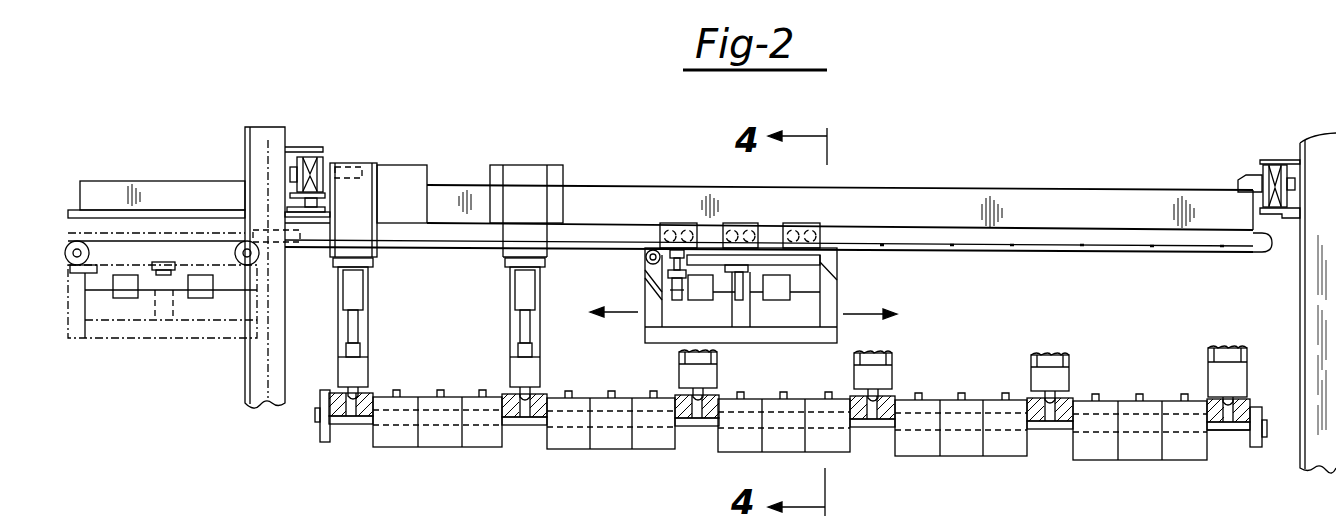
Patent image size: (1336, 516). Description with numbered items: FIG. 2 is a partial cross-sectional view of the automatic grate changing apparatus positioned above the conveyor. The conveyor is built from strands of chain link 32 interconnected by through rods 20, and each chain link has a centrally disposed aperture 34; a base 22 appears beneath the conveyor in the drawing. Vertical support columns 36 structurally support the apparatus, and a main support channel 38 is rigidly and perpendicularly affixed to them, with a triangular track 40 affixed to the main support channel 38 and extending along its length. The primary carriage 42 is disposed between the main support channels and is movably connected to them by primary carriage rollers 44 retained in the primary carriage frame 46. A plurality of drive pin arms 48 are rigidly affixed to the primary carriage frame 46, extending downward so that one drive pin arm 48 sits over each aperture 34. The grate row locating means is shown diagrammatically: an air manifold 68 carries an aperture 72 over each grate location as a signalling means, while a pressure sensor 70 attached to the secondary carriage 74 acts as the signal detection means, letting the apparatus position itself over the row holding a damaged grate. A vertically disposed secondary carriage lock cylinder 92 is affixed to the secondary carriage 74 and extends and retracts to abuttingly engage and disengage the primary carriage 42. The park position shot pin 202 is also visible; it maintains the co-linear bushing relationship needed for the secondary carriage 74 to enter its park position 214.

The through rod 20 is at (435, 438).
The base frame 22 is at (1209, 461).
The strand of chain link 32 is at (355, 415).
The aperture 34 is at (528, 413).
The vertical support column 36 is at (263, 127).
The main support channel 38 is at (297, 148).
The triangular track 40 is at (290, 196).
The primary carriage 42 is at (1110, 185).
The primary carriage roller 44 is at (1263, 165).
The primary carriage frame 46 is at (580, 188).
The drive pin arm 48 is at (520, 177).
The air manifold 68 is at (1268, 242).
The pressure sensor 70 is at (853, 247).
The aperture in air manifold 72 is at (1140, 247).
The secondary carriage 74 is at (843, 257).
The secondary carriage lock cylinder 92 is at (677, 282).
The park position shot pin 202 is at (280, 245).
The park position 214 is at (168, 346).